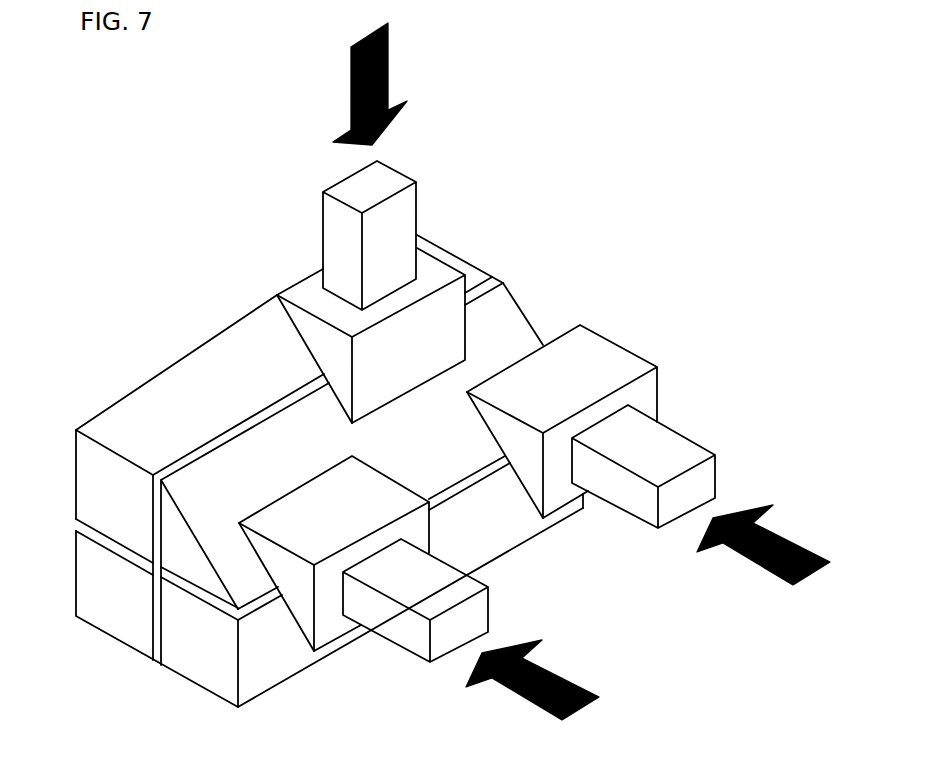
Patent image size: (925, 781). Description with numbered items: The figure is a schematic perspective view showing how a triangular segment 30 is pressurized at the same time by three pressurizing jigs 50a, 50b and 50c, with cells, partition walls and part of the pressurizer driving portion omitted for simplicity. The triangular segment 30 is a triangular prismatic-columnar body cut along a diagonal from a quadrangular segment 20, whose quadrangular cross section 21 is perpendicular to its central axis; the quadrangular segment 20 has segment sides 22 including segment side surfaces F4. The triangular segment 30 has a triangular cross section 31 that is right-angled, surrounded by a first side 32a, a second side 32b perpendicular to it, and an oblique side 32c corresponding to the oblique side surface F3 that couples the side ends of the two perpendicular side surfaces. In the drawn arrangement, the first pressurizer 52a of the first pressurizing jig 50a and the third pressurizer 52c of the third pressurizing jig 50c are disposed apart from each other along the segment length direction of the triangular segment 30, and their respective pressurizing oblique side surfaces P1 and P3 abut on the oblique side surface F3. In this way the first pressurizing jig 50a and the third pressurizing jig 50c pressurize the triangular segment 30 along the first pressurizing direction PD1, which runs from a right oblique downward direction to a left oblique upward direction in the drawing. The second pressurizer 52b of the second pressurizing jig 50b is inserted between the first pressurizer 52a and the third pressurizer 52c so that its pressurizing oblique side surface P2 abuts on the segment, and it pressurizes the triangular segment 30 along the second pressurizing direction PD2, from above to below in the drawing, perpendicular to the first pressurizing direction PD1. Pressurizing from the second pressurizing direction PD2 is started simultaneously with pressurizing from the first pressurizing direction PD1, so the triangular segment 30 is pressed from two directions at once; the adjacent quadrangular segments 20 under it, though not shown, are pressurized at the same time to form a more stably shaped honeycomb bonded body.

The quadrangular segment 20 is at (122, 380).
The quadrangular cross section 21 is at (93, 482).
The segment side 22 is at (127, 457).
The triangular segment 30 is at (520, 290).
The triangular cross section 31 is at (170, 528).
The first side 32a is at (160, 565).
The second side 32b is at (192, 586).
The oblique side 32c is at (190, 518).
The first pressurizing jig 50a is at (339, 435).
The second pressurizing jig 50b is at (493, 184).
The third pressurizing jig 50c is at (714, 286).
The first pressurizer 52a is at (395, 453).
The second pressurizer 52b is at (302, 295).
The third pressurizer 52c is at (595, 355).
The oblique side surface F3 is at (513, 347).
The segment side surface F4 is at (205, 368).
The pressurizing oblique side surface P1 is at (293, 613).
The pressurizing oblique side surface P2 is at (293, 330).
The pressurizing oblique side surface P3 is at (513, 478).
The first pressurizing direction PD1 is at (743, 560).
The second pressurizing direction PD2 is at (388, 65).